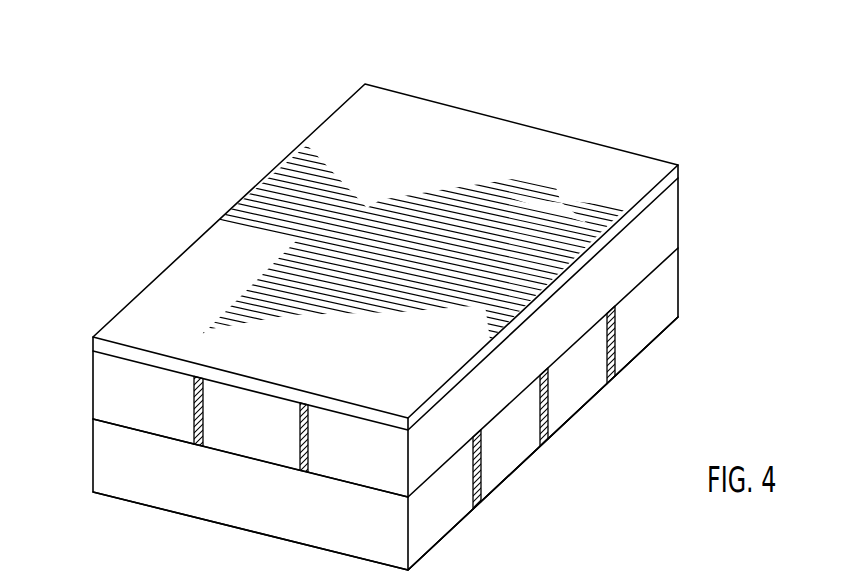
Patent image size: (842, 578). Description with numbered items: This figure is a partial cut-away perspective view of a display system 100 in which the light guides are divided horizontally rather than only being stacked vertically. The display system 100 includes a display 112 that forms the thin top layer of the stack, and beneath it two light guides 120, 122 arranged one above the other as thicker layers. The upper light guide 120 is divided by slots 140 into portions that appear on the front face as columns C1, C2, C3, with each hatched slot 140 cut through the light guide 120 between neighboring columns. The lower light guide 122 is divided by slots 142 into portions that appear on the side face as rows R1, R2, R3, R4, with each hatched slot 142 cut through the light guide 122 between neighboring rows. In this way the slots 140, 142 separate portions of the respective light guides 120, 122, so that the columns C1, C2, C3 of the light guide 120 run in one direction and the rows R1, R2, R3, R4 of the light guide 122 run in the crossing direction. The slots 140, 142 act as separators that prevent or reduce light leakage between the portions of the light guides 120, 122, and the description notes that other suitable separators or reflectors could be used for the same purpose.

The display system 100 is at (630, 90).
The display 112 is at (108, 342).
The light guide 120 is at (108, 383).
The light guide 122 is at (108, 466).
The slots 140 is at (196, 421).
The slots 142 is at (613, 378).
The column C1 is at (143, 413).
The column C2 is at (251, 441).
The column C3 is at (358, 467).
The row R1 is at (647, 341).
The row R2 is at (584, 401).
The row R3 is at (516, 466).
The row R4 is at (449, 529).